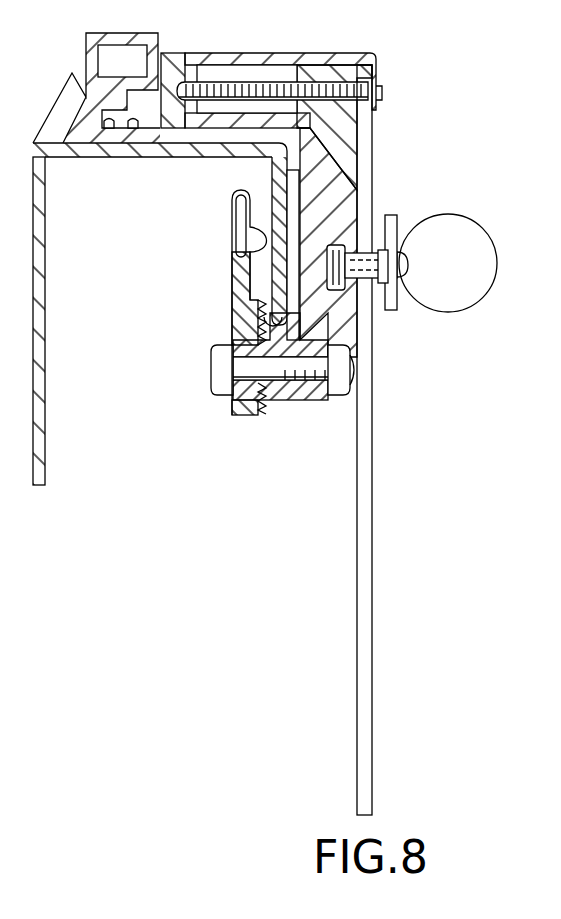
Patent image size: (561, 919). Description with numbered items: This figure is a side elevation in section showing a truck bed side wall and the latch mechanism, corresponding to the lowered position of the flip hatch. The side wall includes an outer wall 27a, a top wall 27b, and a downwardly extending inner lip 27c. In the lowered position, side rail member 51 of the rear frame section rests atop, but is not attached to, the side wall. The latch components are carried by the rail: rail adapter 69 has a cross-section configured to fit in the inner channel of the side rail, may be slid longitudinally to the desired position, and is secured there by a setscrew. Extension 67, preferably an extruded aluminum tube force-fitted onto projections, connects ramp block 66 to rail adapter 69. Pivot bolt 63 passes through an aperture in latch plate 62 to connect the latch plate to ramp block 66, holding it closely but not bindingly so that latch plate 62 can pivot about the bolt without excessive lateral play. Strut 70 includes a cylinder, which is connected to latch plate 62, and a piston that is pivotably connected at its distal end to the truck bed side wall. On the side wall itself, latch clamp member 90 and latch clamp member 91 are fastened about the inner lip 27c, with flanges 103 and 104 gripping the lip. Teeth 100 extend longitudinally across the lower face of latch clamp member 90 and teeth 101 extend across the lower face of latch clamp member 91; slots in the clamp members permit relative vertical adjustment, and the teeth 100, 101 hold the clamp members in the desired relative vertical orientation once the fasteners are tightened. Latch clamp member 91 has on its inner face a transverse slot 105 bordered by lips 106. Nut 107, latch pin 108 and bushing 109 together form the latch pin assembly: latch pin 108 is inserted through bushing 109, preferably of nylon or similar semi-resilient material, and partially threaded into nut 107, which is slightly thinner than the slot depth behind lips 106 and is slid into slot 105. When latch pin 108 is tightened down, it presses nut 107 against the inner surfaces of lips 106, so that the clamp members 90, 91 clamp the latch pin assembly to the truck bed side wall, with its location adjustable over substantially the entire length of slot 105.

The outer wall 27a is at (41, 254).
The top wall 27b is at (93, 158).
The downwardly extending inner lip 27c is at (270, 176).
The side rail member 51 is at (62, 92).
The latch plate 62 is at (392, 440).
The pivot bolt 63 is at (268, 82).
The ramp block 66 is at (328, 52).
The extension 67 is at (228, 53).
The rail adapter 69 is at (173, 53).
The strut 70 is at (460, 222).
The latch clamp member 90 is at (232, 252).
The latch clamp member 91 is at (287, 402).
The teeth 100 is at (260, 312).
The teeth 101 is at (258, 332).
The flange 103 is at (242, 230).
The flange 104 is at (286, 170).
The transverse slot 105 is at (343, 285).
The lips 106 is at (364, 250).
The nut 107 is at (350, 243).
The latch pin 108 is at (400, 298).
The bushing 109 is at (386, 284).